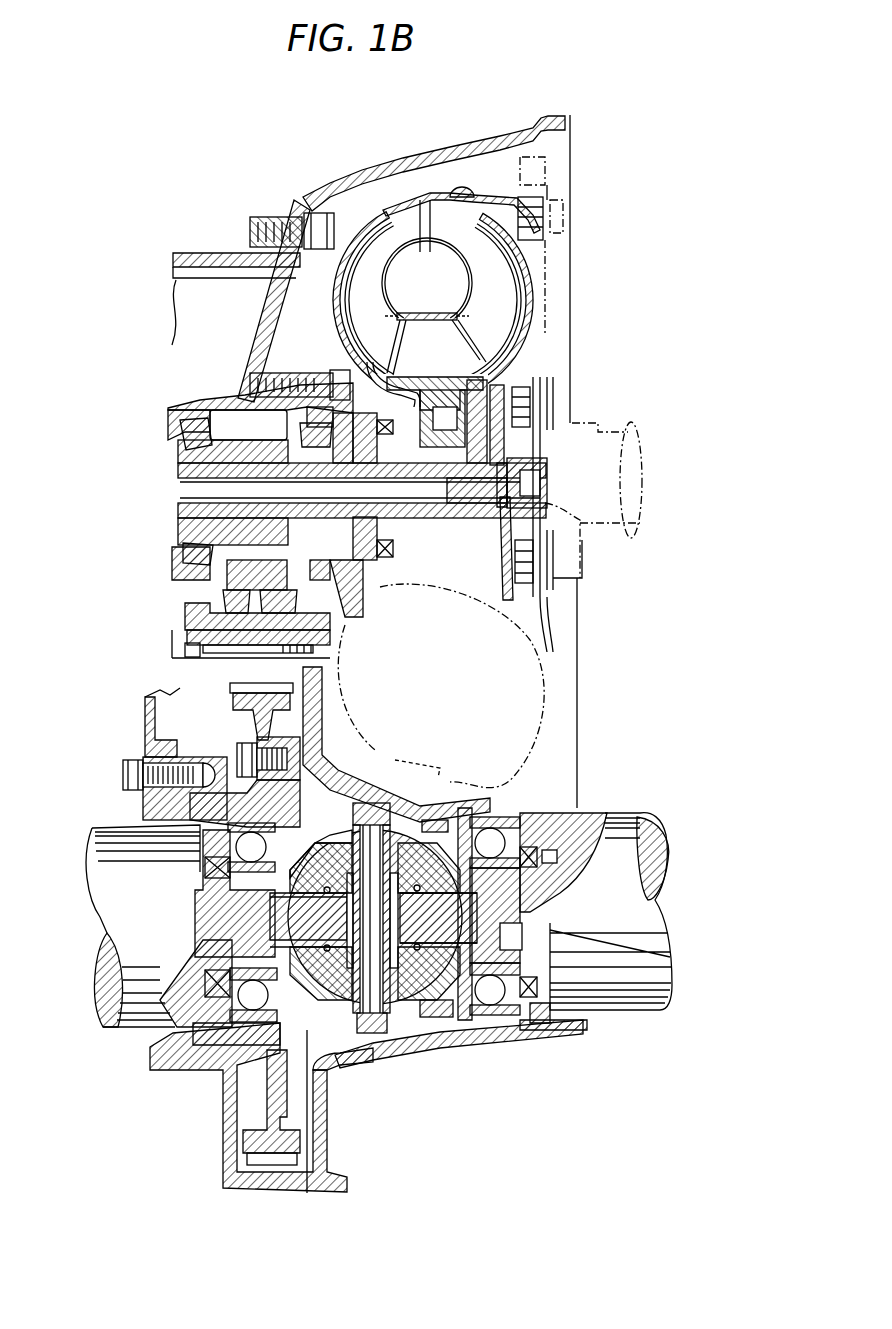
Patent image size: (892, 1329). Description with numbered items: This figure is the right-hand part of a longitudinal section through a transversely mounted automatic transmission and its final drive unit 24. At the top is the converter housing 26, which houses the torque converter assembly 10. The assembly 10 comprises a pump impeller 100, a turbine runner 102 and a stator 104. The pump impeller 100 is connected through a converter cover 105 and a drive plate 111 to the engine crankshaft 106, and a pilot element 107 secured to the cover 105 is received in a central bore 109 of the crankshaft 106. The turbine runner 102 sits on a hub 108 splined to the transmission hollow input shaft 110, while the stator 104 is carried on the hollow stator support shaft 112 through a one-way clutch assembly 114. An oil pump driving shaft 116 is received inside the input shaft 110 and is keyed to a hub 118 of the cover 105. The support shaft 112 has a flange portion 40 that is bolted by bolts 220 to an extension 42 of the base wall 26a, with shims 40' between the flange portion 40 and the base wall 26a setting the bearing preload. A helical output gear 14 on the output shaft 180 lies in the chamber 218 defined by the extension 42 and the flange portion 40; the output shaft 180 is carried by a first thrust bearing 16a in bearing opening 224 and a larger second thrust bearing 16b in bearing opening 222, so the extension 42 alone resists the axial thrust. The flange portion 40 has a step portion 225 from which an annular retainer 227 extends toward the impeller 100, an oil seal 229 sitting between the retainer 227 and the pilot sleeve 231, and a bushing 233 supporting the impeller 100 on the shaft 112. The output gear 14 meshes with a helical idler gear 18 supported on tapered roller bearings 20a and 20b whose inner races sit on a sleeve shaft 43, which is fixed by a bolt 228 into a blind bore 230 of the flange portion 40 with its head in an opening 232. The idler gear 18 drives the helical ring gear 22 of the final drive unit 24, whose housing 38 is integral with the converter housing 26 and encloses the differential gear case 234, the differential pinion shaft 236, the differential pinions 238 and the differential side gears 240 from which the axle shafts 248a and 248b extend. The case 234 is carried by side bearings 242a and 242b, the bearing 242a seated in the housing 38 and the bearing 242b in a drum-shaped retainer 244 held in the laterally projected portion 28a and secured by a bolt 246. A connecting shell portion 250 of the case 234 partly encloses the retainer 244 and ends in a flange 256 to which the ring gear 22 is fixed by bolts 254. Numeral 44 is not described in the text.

The torque converter assembly 10 is at (548, 205).
The helical output gear 14 is at (232, 428).
The first thrust bearing 16a is at (224, 398).
The second tapered roller thrust bearing 16b is at (180, 460).
The helical idler gear 18 is at (385, 590).
The tapered roller bearing 20a is at (375, 650).
The tapered roller bearing 20b is at (215, 607).
The ring gear 22 is at (340, 715).
The final drive unit 24 is at (370, 1090).
The converter housing 26 is at (482, 144).
The base wall 26a is at (280, 323).
The laterally projected portion 28a is at (225, 1150).
The final drive unit housing 38 is at (560, 810).
The flange portion 40 is at (300, 372).
The shims 40' is at (244, 366).
The extension 42 is at (170, 422).
The sleeve shaft 43 is at (200, 652).
The bolt 44 is at (272, 305).
The pump impeller 100 is at (372, 243).
The turbine runner 102 is at (508, 292).
The stator 104 is at (462, 348).
The converter cover 105 is at (535, 255).
The crankshaft 106 is at (603, 422).
The pilot element 107 is at (570, 470).
The hub 108 is at (556, 372).
The central bore 109 is at (592, 512).
The transmission hollow input shaft 110 is at (470, 540).
The drive plate 111 is at (545, 617).
The hollow stator support shaft 112 is at (428, 522).
The torque converter one-way clutch assembly 114 is at (450, 383).
The oil pump driving shaft 116 is at (452, 508).
The hub 118 is at (560, 450).
The output shaft 180 is at (175, 476).
The chamber 218 is at (243, 378).
The bolts 220 is at (322, 365).
The bearing opening 222 is at (172, 432).
The bearing opening 224 is at (350, 342).
The step portion 225 is at (358, 362).
The annular retainer 227 is at (400, 315).
The bolt 228 is at (230, 665).
The oil seal 229 is at (410, 365).
The blind bore 230 is at (352, 640).
The pilot sleeve 231 is at (466, 575).
The opening 232 is at (200, 640).
The bushing 233 is at (412, 563).
The differential gear case 234 is at (378, 1033).
The differential pinion shaft 236 is at (445, 1010).
The differential pinions 238 is at (420, 830).
The differential side gears 240 is at (512, 940).
The differential side bearing 242a is at (498, 1030).
The differential side bearing 242b is at (183, 985).
The drum-shaped retainer 244 is at (152, 1045).
The bolt 246 is at (123, 775).
The axle shaft 248a is at (668, 1000).
The axle shaft 248b is at (132, 1040).
The connecting shell portion 250 is at (205, 838).
The bolts 254 is at (237, 757).
The flange 256 is at (360, 755).